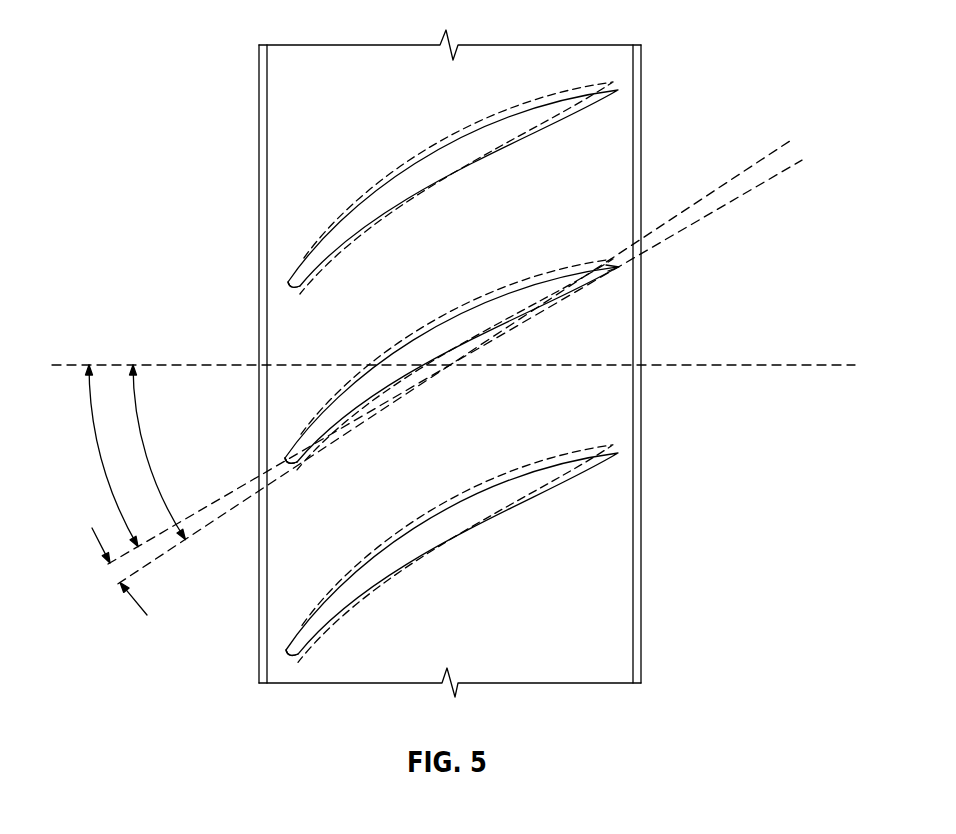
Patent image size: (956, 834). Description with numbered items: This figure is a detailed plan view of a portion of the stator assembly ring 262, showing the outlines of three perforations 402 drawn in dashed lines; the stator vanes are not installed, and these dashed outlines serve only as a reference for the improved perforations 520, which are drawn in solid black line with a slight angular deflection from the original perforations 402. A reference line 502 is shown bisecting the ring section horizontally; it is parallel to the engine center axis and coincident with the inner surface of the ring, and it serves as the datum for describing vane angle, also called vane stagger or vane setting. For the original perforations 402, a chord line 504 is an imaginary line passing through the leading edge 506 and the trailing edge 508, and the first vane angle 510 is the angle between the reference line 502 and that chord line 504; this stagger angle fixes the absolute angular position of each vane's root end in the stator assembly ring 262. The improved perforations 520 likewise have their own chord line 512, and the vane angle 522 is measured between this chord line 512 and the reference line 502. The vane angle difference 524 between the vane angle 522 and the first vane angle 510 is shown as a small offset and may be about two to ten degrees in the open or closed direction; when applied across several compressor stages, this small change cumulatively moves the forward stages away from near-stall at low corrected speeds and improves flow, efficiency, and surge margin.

The stator assembly ring 262 is at (625, 628).
The perforations 402 is at (299, 289).
The reference line 502 is at (118, 364).
The chord line 504 is at (766, 157).
The leading edge 506 is at (289, 468).
The trailing edge 508 is at (603, 258).
The first vane angle 510 is at (137, 414).
The chord line 512 is at (678, 234).
The improved perforations 520 is at (288, 280).
The vane angle 522 is at (108, 483).
The vane angle difference 524 is at (136, 602).